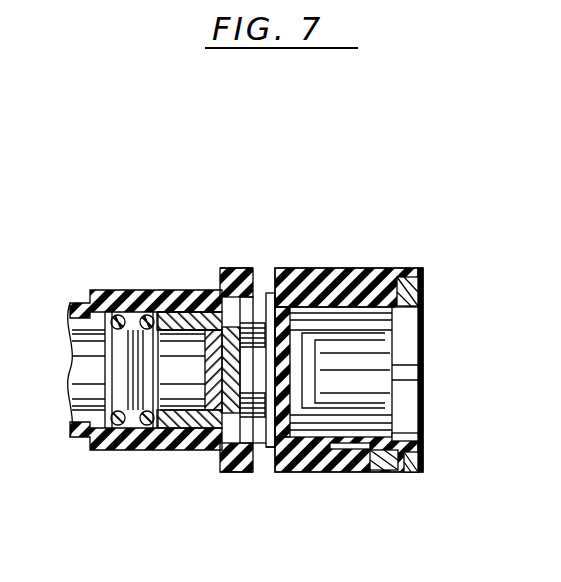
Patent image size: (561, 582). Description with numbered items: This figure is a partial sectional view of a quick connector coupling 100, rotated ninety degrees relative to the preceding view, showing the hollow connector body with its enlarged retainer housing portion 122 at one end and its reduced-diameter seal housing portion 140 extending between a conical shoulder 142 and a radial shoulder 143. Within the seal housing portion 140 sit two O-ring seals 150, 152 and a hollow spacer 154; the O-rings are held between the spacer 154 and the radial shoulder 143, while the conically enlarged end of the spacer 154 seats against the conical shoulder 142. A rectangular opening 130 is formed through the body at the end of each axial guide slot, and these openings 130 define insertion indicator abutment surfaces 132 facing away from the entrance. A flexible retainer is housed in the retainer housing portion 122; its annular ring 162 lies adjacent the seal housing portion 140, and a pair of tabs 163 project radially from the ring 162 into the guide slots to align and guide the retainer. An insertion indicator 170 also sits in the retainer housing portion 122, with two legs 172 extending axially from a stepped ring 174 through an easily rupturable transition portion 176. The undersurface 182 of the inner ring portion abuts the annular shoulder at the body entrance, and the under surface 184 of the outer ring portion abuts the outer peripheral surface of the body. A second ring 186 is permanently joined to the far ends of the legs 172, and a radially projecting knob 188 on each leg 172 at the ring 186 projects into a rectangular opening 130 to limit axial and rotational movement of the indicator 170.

The coupling assembly 100 is at (287, 176).
The retainer housing portion 122 is at (377, 470).
The rectangular opening 130 is at (264, 292).
The insertion indicator abutment surface 132 is at (272, 447).
The seal housing portion 140 is at (142, 448).
The conical shoulder 142 is at (207, 292).
The radial shoulder 143 is at (118, 315).
The O-ring seal 150 is at (88, 437).
The O-ring seal 152 is at (168, 292).
The hollow spacer 154 is at (173, 318).
The annular ring 162 is at (245, 268).
The tab 163 is at (253, 468).
The insertion indicator 170 is at (362, 283).
The leg 172 is at (345, 470).
The stepped ring 174 is at (408, 292).
The transition portion 176 is at (382, 270).
The undersurface of inner ring portion 182 is at (392, 435).
The under surface of outer ring portion 184 is at (425, 462).
The second ring 186 is at (266, 447).
The radially projecting knob 188 is at (272, 293).